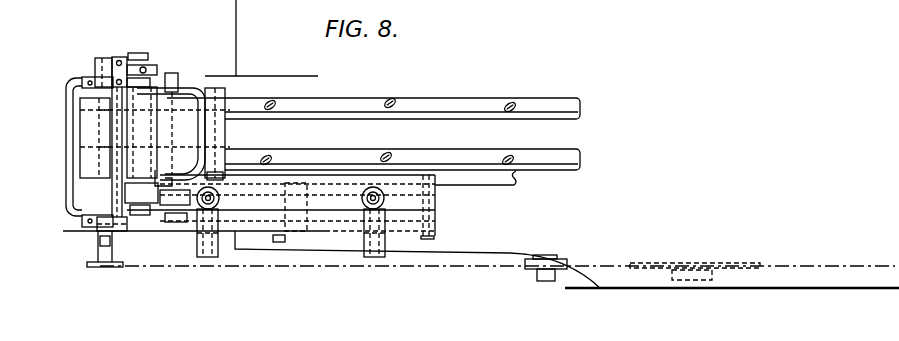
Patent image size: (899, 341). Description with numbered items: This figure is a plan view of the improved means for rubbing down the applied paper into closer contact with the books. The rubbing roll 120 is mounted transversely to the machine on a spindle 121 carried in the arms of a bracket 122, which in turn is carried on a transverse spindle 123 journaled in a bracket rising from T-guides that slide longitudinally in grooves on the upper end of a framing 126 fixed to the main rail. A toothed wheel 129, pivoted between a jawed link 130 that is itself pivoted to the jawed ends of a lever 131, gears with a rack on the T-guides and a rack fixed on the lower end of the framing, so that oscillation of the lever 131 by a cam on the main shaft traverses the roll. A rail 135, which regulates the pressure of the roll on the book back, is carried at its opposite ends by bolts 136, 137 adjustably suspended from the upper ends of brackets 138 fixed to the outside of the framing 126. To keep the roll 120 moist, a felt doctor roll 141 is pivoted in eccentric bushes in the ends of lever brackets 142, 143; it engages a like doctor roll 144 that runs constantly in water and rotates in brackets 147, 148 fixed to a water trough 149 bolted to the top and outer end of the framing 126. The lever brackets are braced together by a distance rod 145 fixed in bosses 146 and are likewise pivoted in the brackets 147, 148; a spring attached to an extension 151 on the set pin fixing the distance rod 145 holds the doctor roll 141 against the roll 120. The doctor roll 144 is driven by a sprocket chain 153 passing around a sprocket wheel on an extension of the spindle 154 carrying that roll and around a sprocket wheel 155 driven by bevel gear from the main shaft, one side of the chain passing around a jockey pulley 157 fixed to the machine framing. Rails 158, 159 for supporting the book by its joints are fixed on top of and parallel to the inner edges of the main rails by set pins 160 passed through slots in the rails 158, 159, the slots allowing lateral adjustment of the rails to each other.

The roll 120 is at (168, 136).
The spindle 121 is at (173, 108).
The bracket 122 is at (227, 82).
The spindle 123 is at (226, 134).
The framing 126 is at (432, 213).
The toothed wheel 129 is at (193, 218).
The jawed link 130 is at (258, 212).
The lever 131 is at (300, 207).
The rail 135 is at (305, 240).
The bolt 136 is at (218, 192).
The bolt 137 is at (430, 203).
The brackets 138 is at (200, 255).
The doctor roll 141 is at (153, 125).
The lever bracket 142 is at (132, 230).
The lever bracket 143 is at (128, 65).
The doctor roll 144 is at (73, 134).
The distance rod 145 is at (122, 107).
The bosses 146 is at (118, 57).
The bracket 147 is at (107, 230).
The bracket 148 is at (102, 83).
The water trough 149 is at (70, 138).
The extension 151 is at (128, 245).
The sprocket chain 153 is at (294, 263).
The spindle 154 is at (102, 238).
The sprocket wheel 155 is at (706, 262).
The jockey pulley 157 is at (541, 257).
The rail 158 is at (475, 161).
The rail 159 is at (463, 107).
The set pins 160 is at (386, 101).